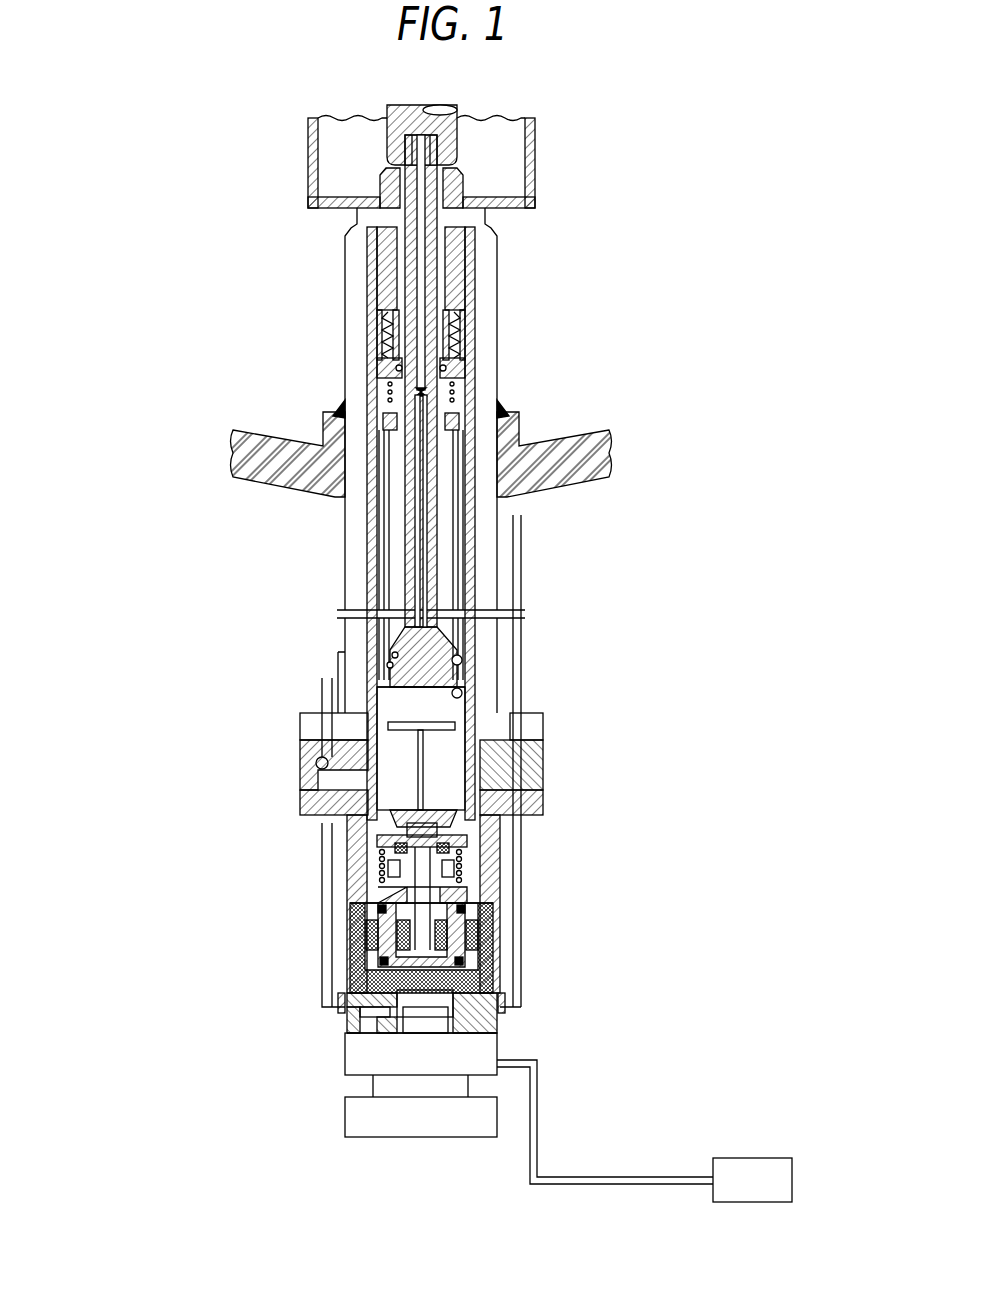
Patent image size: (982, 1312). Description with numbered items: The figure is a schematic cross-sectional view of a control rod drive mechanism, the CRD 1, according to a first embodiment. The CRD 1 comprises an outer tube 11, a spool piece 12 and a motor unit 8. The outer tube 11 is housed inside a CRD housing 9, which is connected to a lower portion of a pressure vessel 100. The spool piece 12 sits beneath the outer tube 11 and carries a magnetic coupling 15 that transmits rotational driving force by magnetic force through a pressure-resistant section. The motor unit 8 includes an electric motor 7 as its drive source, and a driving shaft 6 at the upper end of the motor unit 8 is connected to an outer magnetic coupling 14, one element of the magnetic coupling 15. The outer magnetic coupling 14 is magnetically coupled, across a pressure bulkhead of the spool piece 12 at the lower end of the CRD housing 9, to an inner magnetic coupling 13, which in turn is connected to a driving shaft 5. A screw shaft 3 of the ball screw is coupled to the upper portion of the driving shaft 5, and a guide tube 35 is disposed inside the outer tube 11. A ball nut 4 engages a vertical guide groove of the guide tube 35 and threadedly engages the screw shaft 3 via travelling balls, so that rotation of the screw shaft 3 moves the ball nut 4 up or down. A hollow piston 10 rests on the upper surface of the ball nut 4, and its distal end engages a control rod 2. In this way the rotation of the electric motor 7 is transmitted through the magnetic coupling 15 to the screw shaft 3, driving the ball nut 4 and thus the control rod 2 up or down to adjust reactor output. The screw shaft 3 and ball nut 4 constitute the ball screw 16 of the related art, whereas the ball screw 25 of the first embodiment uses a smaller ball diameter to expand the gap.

The CRD 1 is at (203, 172).
The control rod 2 is at (457, 133).
The screw shaft 3 is at (420, 503).
The ball nut 4 is at (412, 705).
The driving shaft 5 is at (420, 887).
The driving shaft 6 is at (375, 1040).
The electric motor 7 is at (373, 1132).
The motor unit 8 is at (550, 1030).
The CRD housing 9 is at (497, 563).
The hollow piston 10 is at (440, 567).
The outer tube 11 is at (545, 758).
The spool piece 12 is at (545, 800).
The inner magnetic coupling 13 is at (447, 913).
The outer magnetic coupling 14 is at (470, 930).
The magnetic coupling 15 is at (690, 840).
The ball screw 16 is at (288, 674).
The ball screw 25 is at (193, 527).
The guide tube 35 is at (467, 550).
The pressure vessel 100 is at (257, 458).